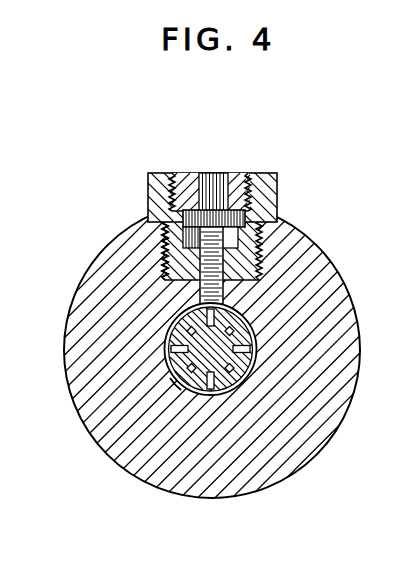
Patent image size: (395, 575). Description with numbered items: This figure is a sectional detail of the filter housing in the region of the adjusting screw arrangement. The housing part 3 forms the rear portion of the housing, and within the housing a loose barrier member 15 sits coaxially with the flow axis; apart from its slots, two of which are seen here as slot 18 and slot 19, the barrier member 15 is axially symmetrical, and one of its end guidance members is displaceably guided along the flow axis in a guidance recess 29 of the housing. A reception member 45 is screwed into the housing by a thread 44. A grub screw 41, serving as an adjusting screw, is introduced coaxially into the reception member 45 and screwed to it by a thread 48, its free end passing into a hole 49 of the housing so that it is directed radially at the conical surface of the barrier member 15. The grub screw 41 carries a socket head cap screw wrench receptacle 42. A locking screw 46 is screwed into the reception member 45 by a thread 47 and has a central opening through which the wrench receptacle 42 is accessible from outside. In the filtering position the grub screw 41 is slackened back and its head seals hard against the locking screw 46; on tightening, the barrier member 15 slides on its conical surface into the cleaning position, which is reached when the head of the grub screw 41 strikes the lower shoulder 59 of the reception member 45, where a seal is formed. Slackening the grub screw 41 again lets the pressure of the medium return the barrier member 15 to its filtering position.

The housing part 3 is at (334, 415).
The barrier member 15 is at (170, 337).
The slot 18 is at (256, 331).
The slot 19 is at (176, 388).
The guidance recess 29 is at (167, 355).
The grub screw 41 is at (260, 256).
The socket head cap screw wrench receptacle 42 is at (193, 208).
The thread 44 is at (263, 248).
The reception member 45 is at (277, 190).
The locking screw 46 is at (233, 183).
The thread 47 is at (172, 190).
The thread 48 is at (165, 258).
The hole 49 is at (236, 329).
The lower shoulder 59 is at (163, 243).